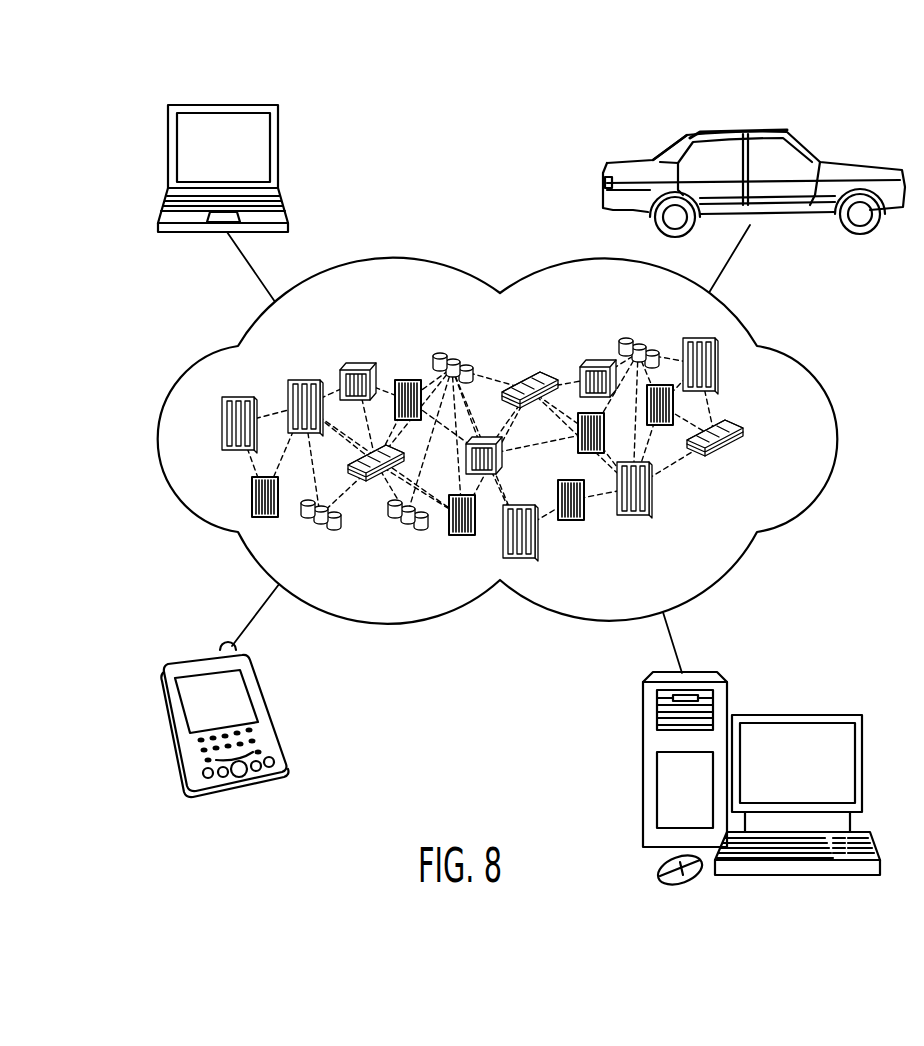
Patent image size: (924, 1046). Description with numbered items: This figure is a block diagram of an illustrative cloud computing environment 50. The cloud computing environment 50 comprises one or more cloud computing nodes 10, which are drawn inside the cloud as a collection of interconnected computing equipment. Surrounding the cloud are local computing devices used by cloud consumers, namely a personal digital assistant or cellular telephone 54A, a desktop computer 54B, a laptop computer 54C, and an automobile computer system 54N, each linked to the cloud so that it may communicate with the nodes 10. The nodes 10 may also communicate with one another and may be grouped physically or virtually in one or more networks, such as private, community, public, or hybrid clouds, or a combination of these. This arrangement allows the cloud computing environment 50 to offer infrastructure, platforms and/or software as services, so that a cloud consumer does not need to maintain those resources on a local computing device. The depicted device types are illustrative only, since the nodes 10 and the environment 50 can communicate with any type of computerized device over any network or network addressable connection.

The cloud computing node 10 is at (754, 437).
The cloud computing environment 50 is at (807, 350).
The personal digital assistant or cellular telephone 54A is at (202, 658).
The desktop computer 54B is at (798, 712).
The laptop computer 54C is at (222, 103).
The automobile computer system 54N is at (737, 130).